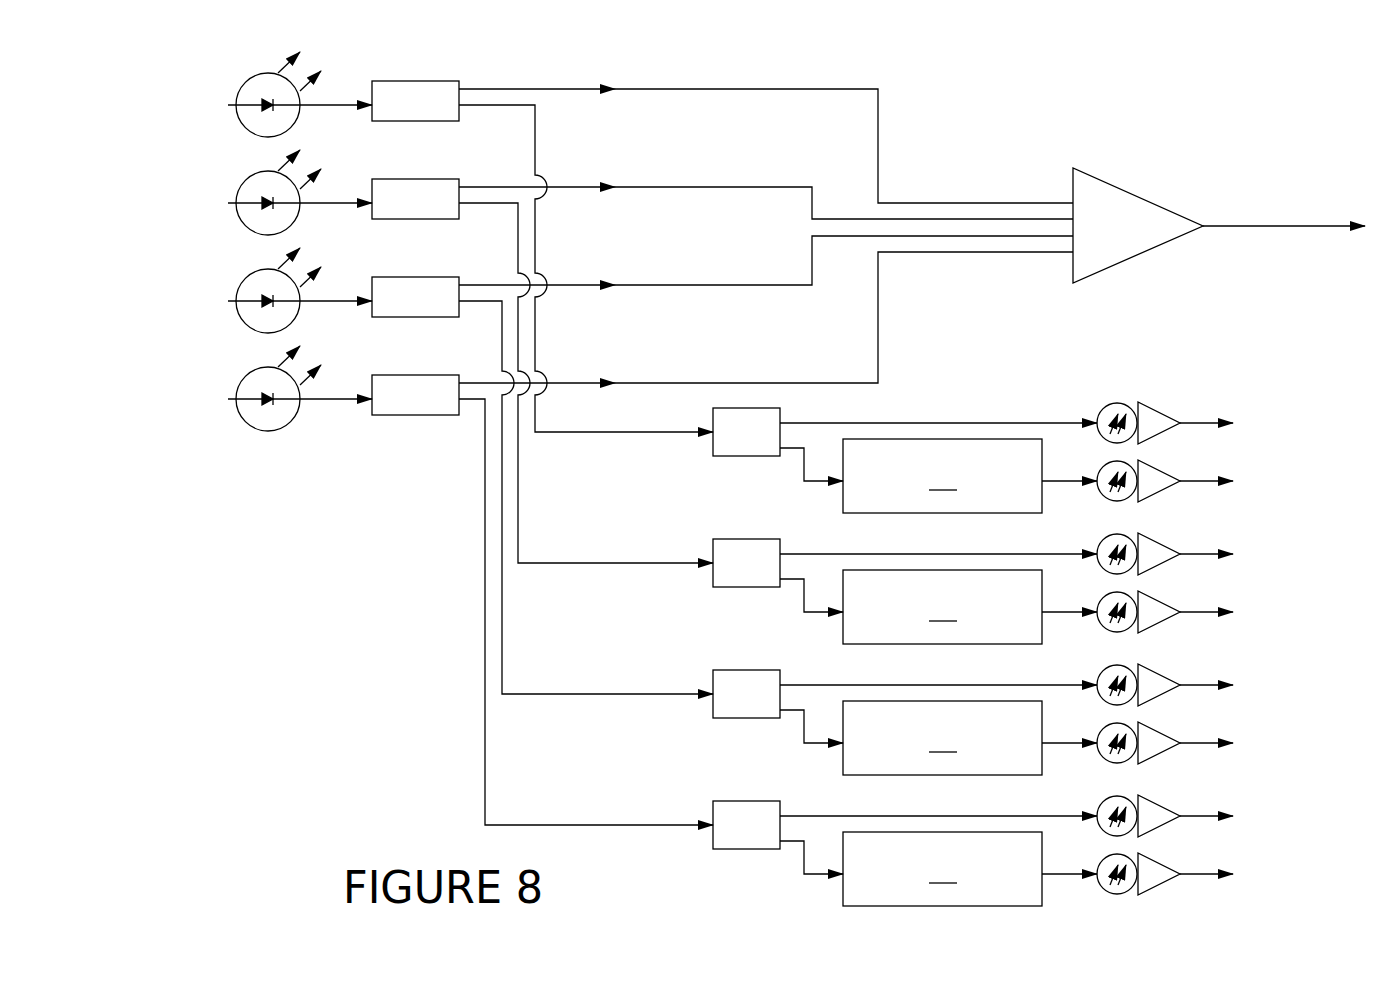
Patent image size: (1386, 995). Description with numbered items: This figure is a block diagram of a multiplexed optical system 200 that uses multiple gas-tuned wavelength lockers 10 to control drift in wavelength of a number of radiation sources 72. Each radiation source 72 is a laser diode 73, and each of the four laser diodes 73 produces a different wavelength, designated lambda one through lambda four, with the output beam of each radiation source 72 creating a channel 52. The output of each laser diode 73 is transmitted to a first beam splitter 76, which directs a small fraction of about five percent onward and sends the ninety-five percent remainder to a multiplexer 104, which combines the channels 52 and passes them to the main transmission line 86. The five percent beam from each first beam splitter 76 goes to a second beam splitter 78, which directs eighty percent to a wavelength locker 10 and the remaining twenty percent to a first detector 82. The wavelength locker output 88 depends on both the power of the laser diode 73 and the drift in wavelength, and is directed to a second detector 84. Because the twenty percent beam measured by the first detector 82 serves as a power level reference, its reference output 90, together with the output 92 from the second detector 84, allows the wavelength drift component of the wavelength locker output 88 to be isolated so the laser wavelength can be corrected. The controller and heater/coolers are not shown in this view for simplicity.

The multiplexed optical system 200 is at (1140, 123).
The radiation source 72 is at (240, 421).
The laser diode 73 is at (300, 241).
The first beam splitter 76 is at (437, 415).
The channel 52 is at (1007, 202).
The multiplexer 104 is at (1097, 248).
The main transmission line 86 is at (1213, 228).
The second beam splitter 78 is at (722, 448).
The gas-tuned wavelength locker 10 is at (942, 672).
The wavelength locker output 88 is at (1075, 481).
The first detector 82 is at (1145, 410).
The second detector 84 is at (1153, 482).
The reference output 90 is at (1210, 418).
The second detector output 92 is at (1202, 478).